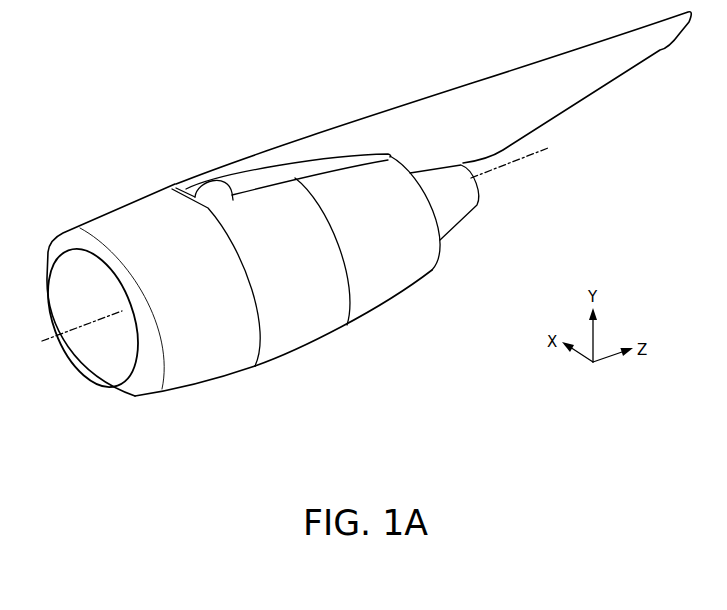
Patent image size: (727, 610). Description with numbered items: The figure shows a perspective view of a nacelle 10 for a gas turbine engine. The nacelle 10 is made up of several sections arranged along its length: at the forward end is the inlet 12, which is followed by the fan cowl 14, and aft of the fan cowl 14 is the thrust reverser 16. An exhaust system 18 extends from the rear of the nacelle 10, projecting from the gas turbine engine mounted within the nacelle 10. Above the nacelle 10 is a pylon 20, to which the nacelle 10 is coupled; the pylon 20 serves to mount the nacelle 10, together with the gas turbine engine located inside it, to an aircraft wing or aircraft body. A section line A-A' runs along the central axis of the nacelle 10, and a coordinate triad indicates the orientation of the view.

The nacelle 10 is at (127, 68).
The inlet 12 is at (108, 228).
The fan cowl 14 is at (330, 320).
The thrust reverser 16 is at (393, 278).
The exhaust system 18 is at (458, 205).
The pylon 20 is at (392, 118).